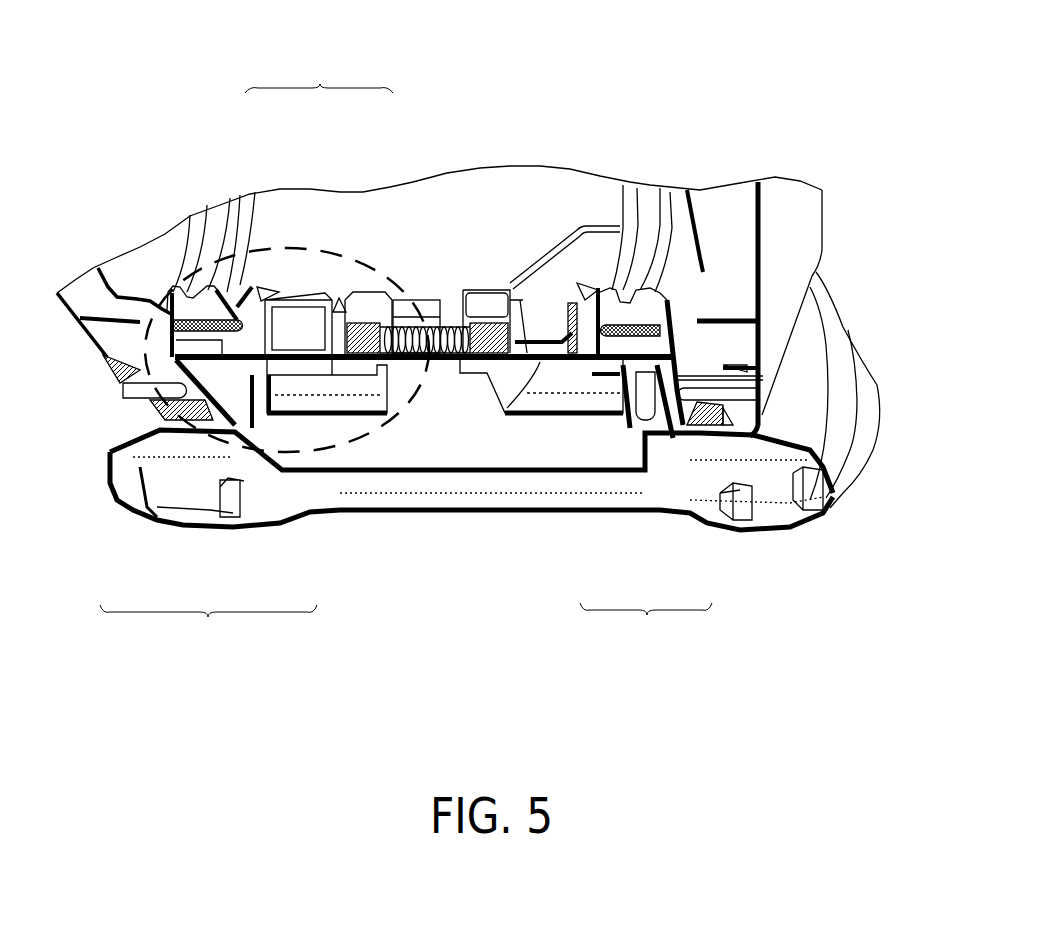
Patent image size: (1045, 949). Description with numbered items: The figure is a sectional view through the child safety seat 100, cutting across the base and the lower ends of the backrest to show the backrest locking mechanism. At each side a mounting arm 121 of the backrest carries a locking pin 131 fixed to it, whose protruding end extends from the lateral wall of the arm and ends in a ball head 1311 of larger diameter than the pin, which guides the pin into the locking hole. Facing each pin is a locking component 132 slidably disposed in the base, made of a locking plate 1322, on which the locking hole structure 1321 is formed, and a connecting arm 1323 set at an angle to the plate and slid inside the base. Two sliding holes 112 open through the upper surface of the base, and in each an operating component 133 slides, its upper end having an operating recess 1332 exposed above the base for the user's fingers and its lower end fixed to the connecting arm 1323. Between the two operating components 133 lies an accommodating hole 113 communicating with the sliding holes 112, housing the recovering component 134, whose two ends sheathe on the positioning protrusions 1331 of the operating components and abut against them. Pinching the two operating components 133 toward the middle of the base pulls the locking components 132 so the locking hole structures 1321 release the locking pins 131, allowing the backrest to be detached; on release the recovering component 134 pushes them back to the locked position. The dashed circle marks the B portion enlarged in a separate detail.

The child safety seat 100 is at (97, 34).
The sliding hole 112 is at (463, 293).
The accommodating hole 113 is at (447, 362).
The mounting arm 121 is at (183, 348).
The locking pin 131 is at (186, 302).
The ball head 1311 is at (243, 312).
The locking component 132 is at (406, 629).
The locking hole structure 1321 is at (195, 426).
The locking plate 1322 is at (238, 425).
The connecting arm 1323 is at (308, 363).
The operating component 133 is at (478, 298).
The positioning protrusion 1331 is at (369, 298).
The operating recess 1332 is at (338, 307).
The recovering component 134 is at (430, 325).
The B portion B is at (147, 347).